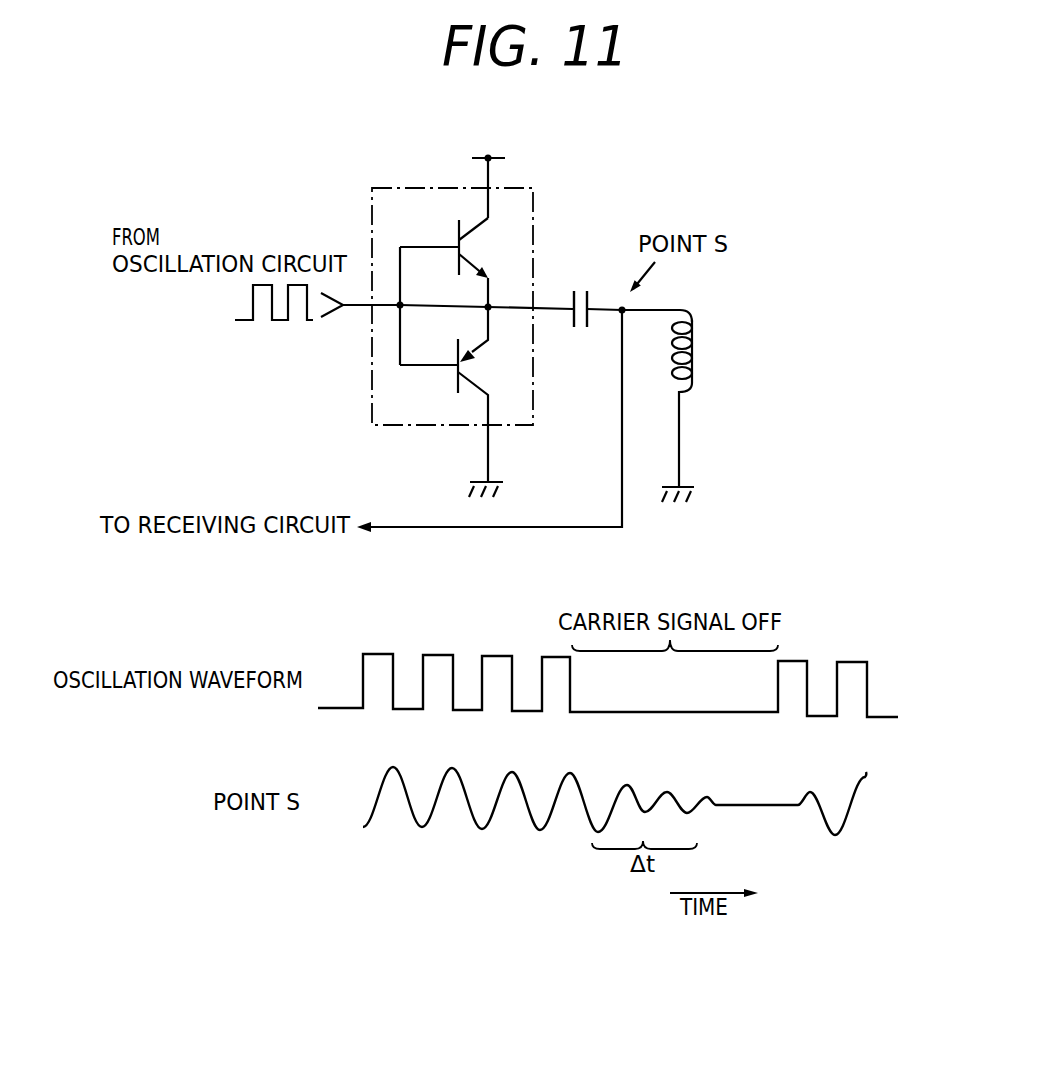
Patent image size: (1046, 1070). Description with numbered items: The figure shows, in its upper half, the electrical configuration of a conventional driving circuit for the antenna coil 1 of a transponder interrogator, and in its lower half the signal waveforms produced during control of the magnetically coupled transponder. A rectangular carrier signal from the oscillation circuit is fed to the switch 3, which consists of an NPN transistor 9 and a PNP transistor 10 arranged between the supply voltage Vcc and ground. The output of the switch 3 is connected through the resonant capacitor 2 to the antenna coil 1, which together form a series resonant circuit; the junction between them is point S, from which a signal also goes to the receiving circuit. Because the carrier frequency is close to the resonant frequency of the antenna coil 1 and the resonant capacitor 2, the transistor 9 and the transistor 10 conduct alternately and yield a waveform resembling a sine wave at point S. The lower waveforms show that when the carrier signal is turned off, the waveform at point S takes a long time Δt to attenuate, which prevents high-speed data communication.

The antenna coil 1 is at (690, 358).
The resonant capacitor 2 is at (587, 296).
The switch 3 is at (520, 198).
The NPN transistor 9 is at (458, 247).
The PNP transistor 10 is at (458, 376).